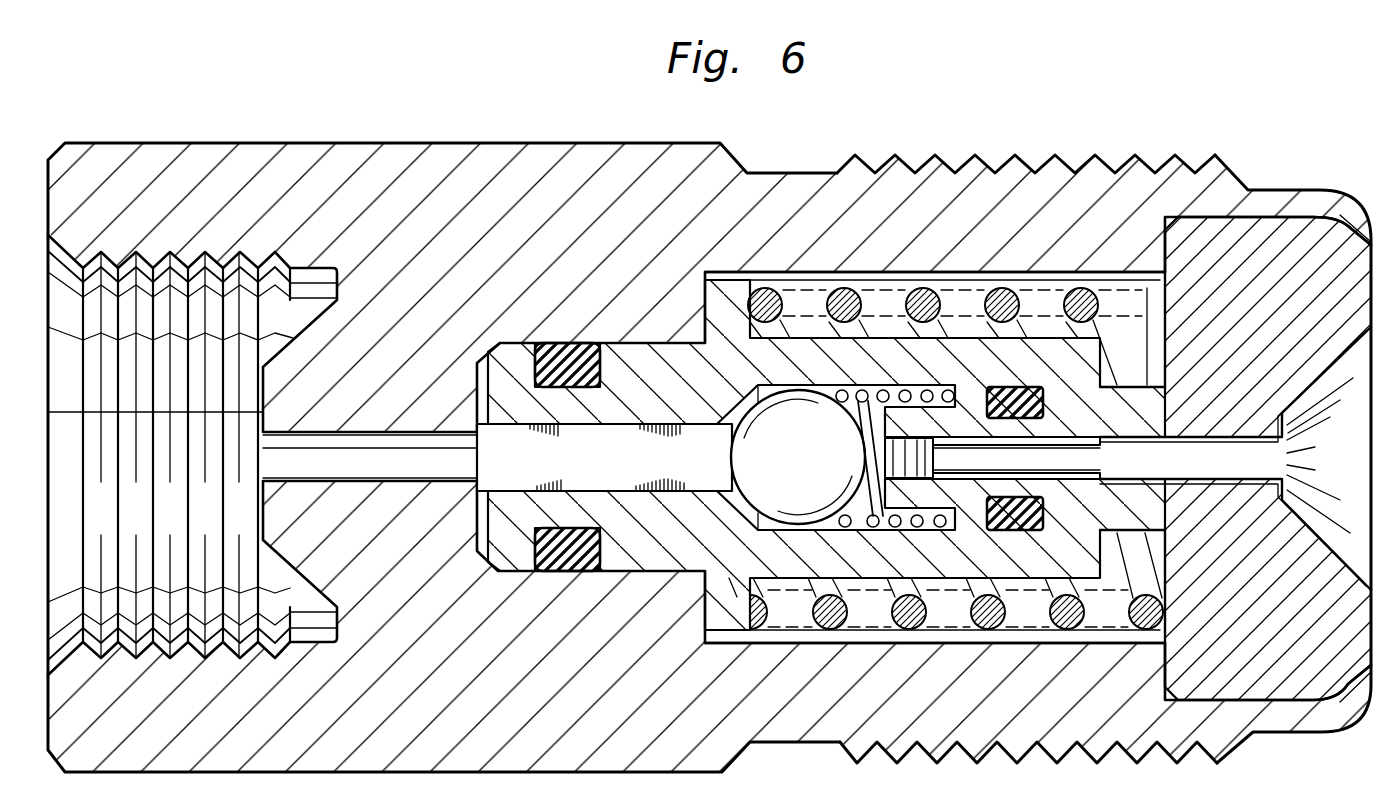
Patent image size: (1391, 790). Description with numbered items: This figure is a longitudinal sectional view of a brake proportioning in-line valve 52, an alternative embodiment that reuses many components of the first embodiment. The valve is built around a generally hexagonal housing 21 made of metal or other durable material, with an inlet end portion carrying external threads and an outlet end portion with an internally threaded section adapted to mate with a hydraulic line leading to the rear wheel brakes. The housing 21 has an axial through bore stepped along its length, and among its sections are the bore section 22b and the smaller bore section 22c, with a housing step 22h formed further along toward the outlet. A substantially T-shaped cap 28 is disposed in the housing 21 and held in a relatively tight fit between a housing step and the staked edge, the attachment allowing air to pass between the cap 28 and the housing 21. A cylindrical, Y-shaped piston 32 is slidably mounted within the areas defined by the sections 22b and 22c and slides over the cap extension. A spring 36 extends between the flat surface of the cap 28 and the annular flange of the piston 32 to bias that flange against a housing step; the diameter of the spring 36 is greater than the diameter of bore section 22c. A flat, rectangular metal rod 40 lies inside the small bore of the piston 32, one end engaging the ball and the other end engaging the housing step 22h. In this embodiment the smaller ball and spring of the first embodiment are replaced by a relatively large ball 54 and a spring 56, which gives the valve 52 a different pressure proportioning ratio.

The housing 21 is at (501, 249).
The brake proportioning in-line valve 52 is at (1250, 163).
The bore section 22b is at (921, 638).
The bore section 22c is at (622, 570).
The housing step 22h is at (481, 548).
The cap 28 is at (1276, 324).
The piston 32 is at (677, 396).
The spring 36 is at (812, 588).
The rod 40 is at (614, 465).
The ball 54 is at (787, 484).
The spring 56 is at (880, 426).